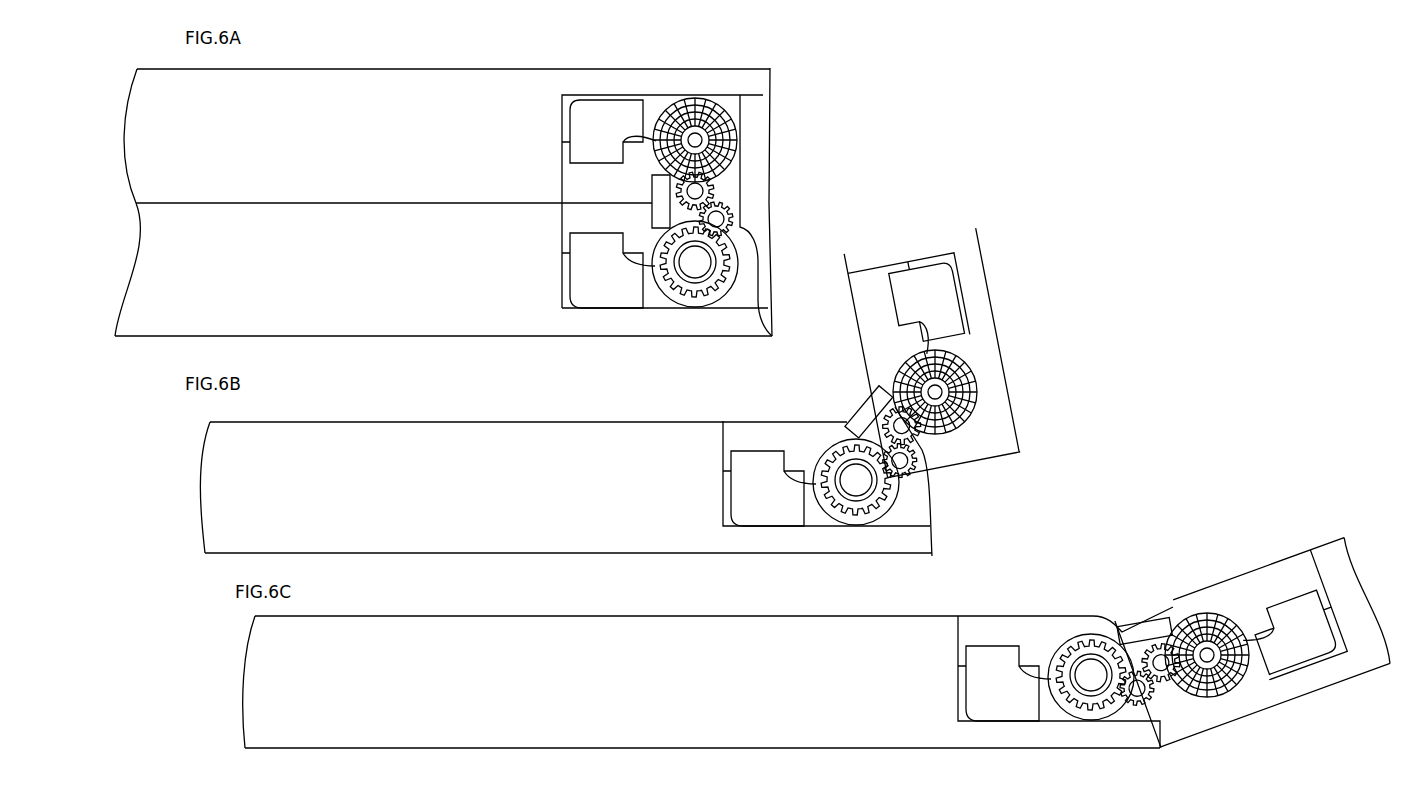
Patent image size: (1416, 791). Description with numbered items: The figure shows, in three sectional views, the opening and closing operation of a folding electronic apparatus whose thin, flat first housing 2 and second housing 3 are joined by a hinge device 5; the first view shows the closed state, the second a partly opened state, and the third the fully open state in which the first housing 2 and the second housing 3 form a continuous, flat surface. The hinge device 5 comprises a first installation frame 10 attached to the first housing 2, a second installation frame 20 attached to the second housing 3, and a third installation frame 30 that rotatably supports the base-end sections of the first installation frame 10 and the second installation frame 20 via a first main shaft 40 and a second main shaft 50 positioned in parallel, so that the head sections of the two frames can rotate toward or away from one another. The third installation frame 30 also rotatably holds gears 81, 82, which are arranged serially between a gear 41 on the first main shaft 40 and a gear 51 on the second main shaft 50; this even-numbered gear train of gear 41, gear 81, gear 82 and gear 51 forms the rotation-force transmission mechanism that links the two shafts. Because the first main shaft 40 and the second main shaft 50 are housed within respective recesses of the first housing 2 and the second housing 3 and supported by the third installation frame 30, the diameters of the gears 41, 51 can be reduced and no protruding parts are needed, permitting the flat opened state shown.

In FIG. 6A, the first housing 2 is at (373, 322).
In FIG. 6B, the first housing 2 is at (481, 540).
In FIG. 6C, the first housing 2 is at (566, 738).
In FIG. 6A, the second housing 3 is at (373, 84).
In FIG. 6B, the second housing 3 is at (982, 289).
In FIG. 6C, the second housing 3 is at (1343, 668).
In FIG. 6A, the hinge device 5 is at (808, 213).
In FIG. 6A, the first installation frame 10 is at (617, 298).
In FIG. 6B, the first installation frame 10 is at (776, 522).
In FIG. 6C, the first installation frame 10 is at (1014, 717).
In FIG. 6A, the second installation frame 20 is at (600, 106).
In FIG. 6B, the second installation frame 20 is at (964, 322).
In FIG. 6C, the second installation frame 20 is at (1288, 664).
In FIG. 6A, the third installation frame 30 is at (740, 196).
In FIG. 6B, the third installation frame 30 is at (932, 464).
In FIG. 6C, the third installation frame 30 is at (1176, 704).
In FIG. 6A, the first main shaft 40 is at (710, 270).
In FIG. 6B, the first main shaft 40 is at (858, 488).
In FIG. 6C, the first main shaft 40 is at (1088, 680).
In FIG. 6A, the gear 41 is at (735, 270).
In FIG. 6B, the gear 41 is at (876, 500).
In FIG. 6C, the gear 41 is at (1103, 708).
In FIG. 6A, the second main shaft 50 is at (728, 124).
In FIG. 6B, the second main shaft 50 is at (978, 375).
In FIG. 6C, the second main shaft 50 is at (1202, 620).
In FIG. 6A, the gear 51 is at (705, 141).
In FIG. 6B, the gear 51 is at (950, 400).
In FIG. 6C, the gear 51 is at (1207, 650).
In FIG. 6A, the gear 81 is at (733, 226).
In FIG. 6B, the gear 81 is at (920, 486).
In FIG. 6C, the gear 81 is at (1133, 710).
In FIG. 6A, the gear 82 is at (702, 187).
In FIG. 6B, the gear 82 is at (915, 437).
In FIG. 6C, the gear 82 is at (1168, 640).